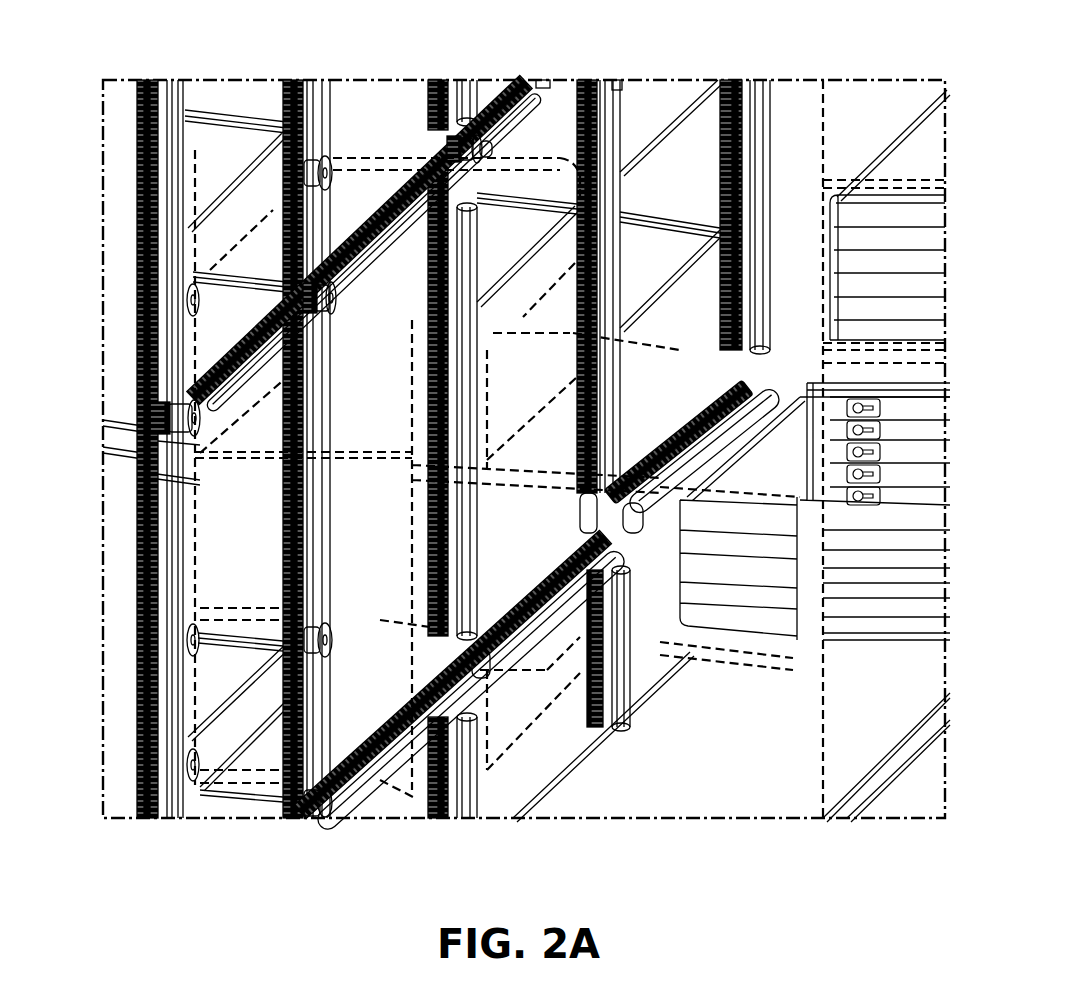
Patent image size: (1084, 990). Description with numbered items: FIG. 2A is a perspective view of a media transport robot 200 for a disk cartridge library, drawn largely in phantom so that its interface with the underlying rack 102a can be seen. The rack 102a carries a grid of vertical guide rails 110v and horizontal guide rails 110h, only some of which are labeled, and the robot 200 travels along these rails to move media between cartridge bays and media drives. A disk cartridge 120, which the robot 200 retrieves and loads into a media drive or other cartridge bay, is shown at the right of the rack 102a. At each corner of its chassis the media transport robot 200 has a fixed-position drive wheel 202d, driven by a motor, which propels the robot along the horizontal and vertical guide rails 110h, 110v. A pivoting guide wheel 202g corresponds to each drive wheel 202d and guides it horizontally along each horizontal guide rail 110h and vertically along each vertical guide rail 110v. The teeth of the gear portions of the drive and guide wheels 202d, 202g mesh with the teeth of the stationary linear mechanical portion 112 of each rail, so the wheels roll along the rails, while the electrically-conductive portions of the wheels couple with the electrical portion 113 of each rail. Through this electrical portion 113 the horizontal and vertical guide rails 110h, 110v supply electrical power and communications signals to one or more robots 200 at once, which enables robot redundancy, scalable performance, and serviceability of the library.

The rack 102a is at (137, 150).
The vertical guide rail 110v is at (142, 213).
The horizontal guide rail 110h is at (483, 86).
The mechanical portion 112 is at (546, 84).
The electrical portion 113 is at (617, 86).
The disk cartridge 120 is at (703, 610).
The media transport robot 200 is at (225, 548).
The drive wheel 202d is at (310, 158).
The guide wheel 202g is at (332, 301).